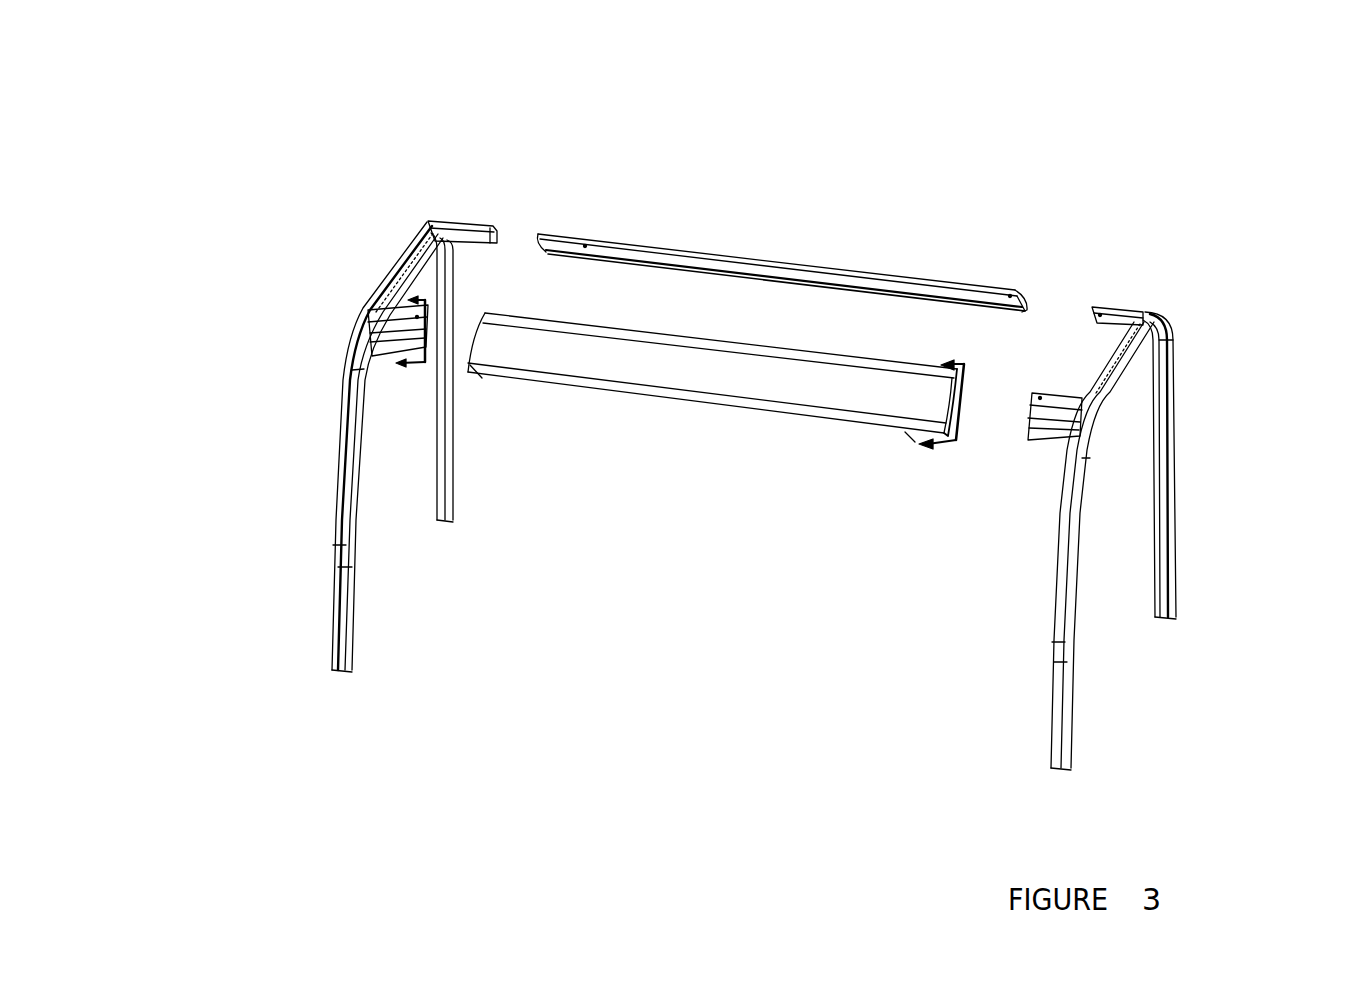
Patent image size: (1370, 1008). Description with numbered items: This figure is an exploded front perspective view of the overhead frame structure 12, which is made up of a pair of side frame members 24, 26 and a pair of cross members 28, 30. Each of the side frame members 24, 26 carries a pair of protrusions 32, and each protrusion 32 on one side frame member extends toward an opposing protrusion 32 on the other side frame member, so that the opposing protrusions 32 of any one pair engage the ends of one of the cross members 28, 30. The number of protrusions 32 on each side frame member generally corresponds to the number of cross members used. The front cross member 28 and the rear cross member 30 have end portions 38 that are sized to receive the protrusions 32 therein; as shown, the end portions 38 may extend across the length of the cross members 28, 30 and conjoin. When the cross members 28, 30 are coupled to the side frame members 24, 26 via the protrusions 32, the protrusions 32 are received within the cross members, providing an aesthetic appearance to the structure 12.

The overhead frame structure 12 is at (967, 137).
The side frame member 24 is at (1175, 480).
The side frame member 26 is at (340, 453).
The front cross member 28 is at (662, 373).
The rear cross member 30 is at (598, 250).
The protrusion 32 is at (462, 232).
The end portion 38 is at (583, 233).